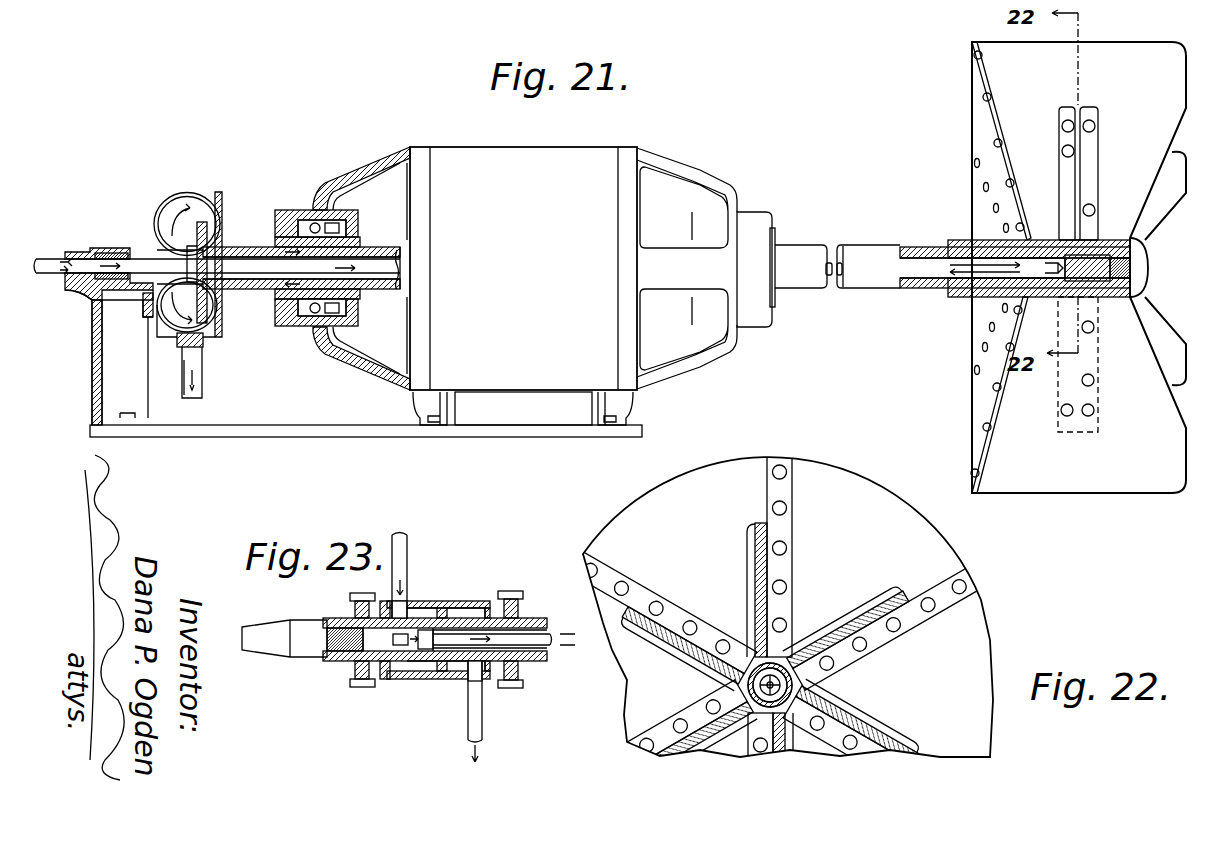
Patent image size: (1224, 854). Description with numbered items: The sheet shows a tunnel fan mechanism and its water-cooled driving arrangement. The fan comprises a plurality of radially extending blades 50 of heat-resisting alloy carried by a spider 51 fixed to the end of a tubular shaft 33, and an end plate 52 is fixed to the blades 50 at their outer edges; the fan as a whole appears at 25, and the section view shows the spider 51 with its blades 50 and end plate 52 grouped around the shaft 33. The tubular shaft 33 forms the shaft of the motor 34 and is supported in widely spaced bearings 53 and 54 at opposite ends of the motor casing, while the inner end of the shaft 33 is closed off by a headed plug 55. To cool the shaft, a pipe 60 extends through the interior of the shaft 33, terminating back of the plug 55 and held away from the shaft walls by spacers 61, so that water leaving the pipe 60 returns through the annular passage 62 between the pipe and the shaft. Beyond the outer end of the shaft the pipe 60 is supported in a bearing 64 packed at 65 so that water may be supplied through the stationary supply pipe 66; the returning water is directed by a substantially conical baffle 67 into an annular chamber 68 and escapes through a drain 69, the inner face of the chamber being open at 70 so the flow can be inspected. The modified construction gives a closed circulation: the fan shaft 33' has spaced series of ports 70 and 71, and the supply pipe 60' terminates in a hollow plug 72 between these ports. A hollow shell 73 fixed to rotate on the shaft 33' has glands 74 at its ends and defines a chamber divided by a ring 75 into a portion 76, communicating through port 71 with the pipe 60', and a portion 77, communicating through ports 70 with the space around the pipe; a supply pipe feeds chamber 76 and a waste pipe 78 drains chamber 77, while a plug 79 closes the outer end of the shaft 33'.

In FIG. 22, the fan 25 is at (1007, 50).
In FIG. 21, the tubular shaft 33 is at (868, 253).
In FIG. 22, the tubular shaft 33 is at (727, 685).
In FIG. 21, the motor 34 is at (560, 148).
In FIG. 22, the blades 50 is at (742, 503).
In FIG. 22, the spider 51 is at (1098, 167).
In FIG. 22, the end plate 52 is at (978, 131).
In FIG. 21, the bearing 53 is at (757, 210).
In FIG. 21, the bearing 54 is at (303, 210).
In FIG. 22, the headed plug 55 is at (1140, 262).
In FIG. 21, the pipe 60 is at (974, 292).
In FIG. 22, the pipe 60 is at (920, 465).
In FIG. 22, the spacers 61 is at (1063, 280).
In FIG. 21, the annular passage 62 is at (925, 255).
In FIG. 22, the annular passage 62 is at (1039, 268).
In FIG. 21, the bearing 64 is at (93, 236).
In FIG. 21, the packing 65 is at (101, 250).
In FIG. 21, the stationary supply pipe 66 is at (48, 276).
In FIG. 21, the conical baffle 67 is at (225, 232).
In FIG. 21, the annular chamber 68 is at (222, 198).
In FIG. 21, the drain 69 is at (202, 378).
In FIG. 21, the open inner face / ports 70 is at (218, 222).
In FIG. 23, the open inner face / ports 70 is at (478, 628).
In FIG. 23, the port 71 is at (404, 627).
In FIG. 23, the hollow plug 72 is at (438, 628).
In FIG. 23, the hollow shell 73 is at (460, 610).
In FIG. 23, the glands 74 is at (368, 598).
In FIG. 23, the ring 75 is at (450, 657).
In FIG. 23, the chamber 76 is at (412, 610).
In FIG. 23, the chamber 77 is at (407, 538).
In FIG. 23, the waste pipe 78 is at (483, 713).
In FIG. 23, the plug 79 is at (325, 660).
In FIG. 23, the fan shaft 33' is at (504, 617).
In FIG. 23, the supply pipe 60' is at (501, 667).